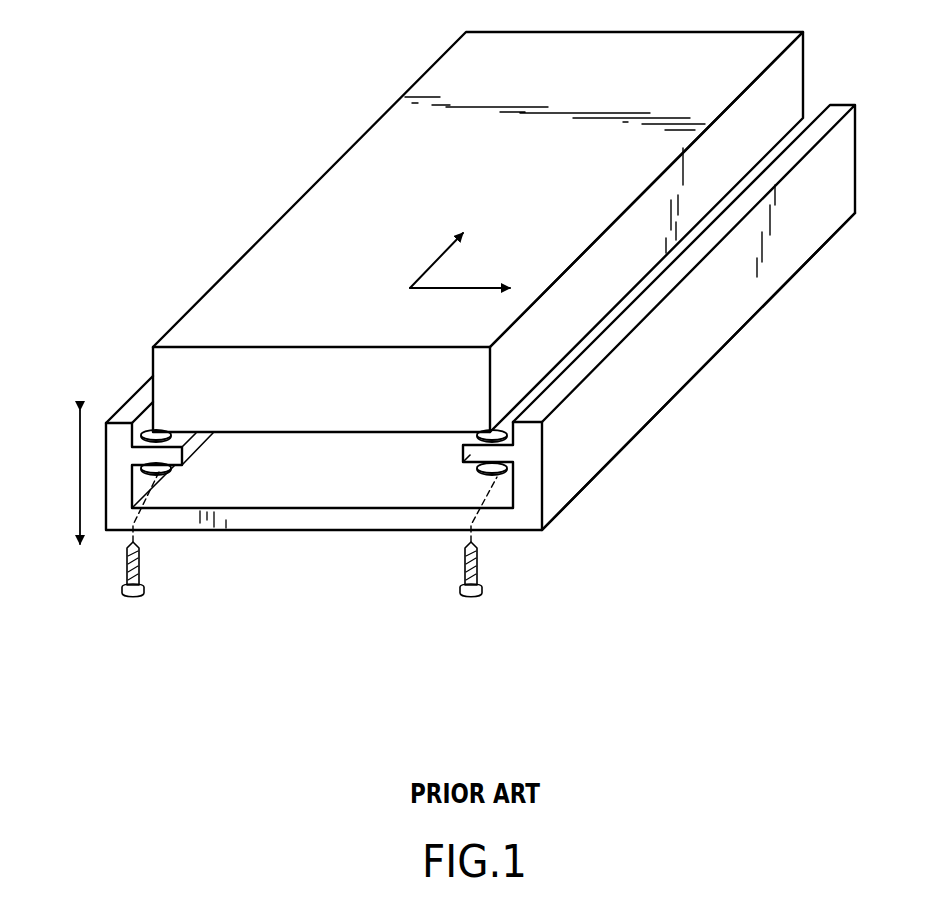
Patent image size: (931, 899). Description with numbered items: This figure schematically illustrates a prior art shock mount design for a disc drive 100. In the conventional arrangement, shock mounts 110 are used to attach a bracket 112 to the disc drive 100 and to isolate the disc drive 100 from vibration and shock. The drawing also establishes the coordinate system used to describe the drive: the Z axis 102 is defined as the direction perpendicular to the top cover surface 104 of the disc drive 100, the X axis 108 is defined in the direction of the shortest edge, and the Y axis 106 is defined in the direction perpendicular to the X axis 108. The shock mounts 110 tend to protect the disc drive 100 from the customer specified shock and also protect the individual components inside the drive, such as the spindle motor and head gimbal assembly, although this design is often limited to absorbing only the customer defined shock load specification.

The disc drive 100 is at (518, 232).
The Z axis 102 is at (436, 351).
The top cover surface 104 is at (337, 190).
The Y axis 106 is at (407, 260).
The X axis 108 is at (443, 308).
The shock mounts 110 is at (503, 472).
The bracket 112 is at (662, 387).